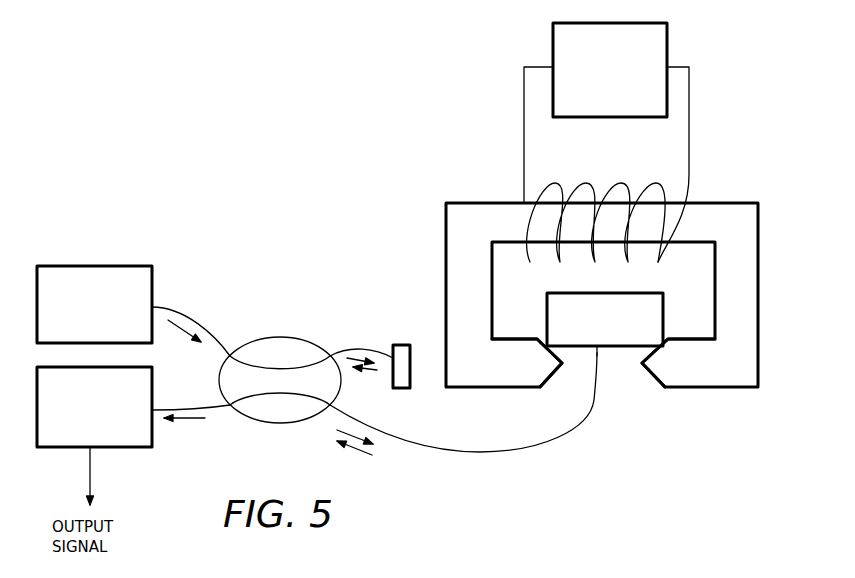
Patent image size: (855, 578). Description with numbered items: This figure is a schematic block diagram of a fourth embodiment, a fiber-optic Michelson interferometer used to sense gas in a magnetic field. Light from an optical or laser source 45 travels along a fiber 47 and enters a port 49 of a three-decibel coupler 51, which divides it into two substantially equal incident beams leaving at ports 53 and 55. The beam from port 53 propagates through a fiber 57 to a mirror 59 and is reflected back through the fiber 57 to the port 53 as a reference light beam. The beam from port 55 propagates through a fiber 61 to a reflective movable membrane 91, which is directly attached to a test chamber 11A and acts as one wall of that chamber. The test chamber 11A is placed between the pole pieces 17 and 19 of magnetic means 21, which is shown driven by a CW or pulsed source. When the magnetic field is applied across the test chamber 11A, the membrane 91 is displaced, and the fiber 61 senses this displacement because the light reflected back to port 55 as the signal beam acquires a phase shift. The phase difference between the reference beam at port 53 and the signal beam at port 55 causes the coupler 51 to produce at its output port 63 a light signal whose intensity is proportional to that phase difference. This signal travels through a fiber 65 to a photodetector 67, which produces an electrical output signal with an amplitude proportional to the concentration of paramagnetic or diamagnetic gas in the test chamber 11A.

The optical source 45 is at (102, 265).
The optical fiber 47 is at (183, 317).
The port 49 is at (230, 354).
The 3 dB coupler 51 is at (296, 313).
The port 53 is at (332, 355).
The port 55 is at (332, 406).
The fiber 57 is at (365, 352).
The mirror 59 is at (403, 388).
The fiber 61 is at (455, 453).
The output port 63 is at (225, 407).
The fiber 65 is at (172, 410).
The photodetector 67 is at (127, 447).
The pole piece 17 is at (512, 375).
The pole piece 19 is at (660, 375).
The magnetic means 21 is at (714, 173).
The test chamber 11A is at (625, 304).
The reflective movable membrane 91 is at (623, 350).